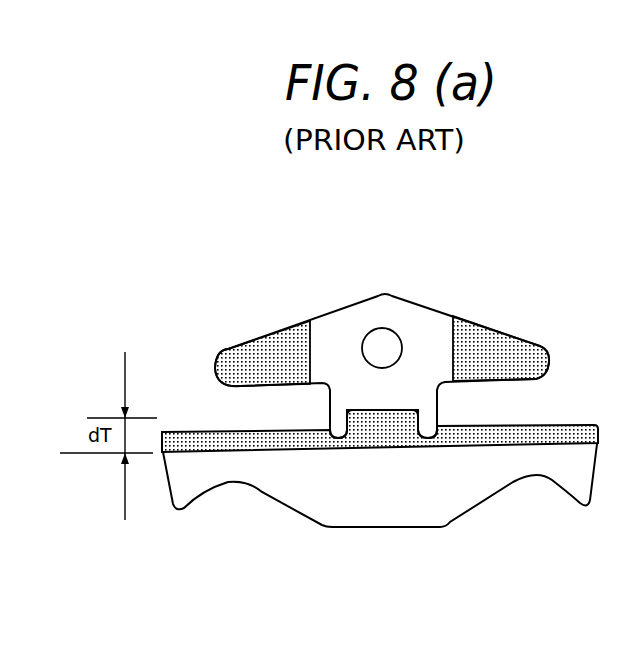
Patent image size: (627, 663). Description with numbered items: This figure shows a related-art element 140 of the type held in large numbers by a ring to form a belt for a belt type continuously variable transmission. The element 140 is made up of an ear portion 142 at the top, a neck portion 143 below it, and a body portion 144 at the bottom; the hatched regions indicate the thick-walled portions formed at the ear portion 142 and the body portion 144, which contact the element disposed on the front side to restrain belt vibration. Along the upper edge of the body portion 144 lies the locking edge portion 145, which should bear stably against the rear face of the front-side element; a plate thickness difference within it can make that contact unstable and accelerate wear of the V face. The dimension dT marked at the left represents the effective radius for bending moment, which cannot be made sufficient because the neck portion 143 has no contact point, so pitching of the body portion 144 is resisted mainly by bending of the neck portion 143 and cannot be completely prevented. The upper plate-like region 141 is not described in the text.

The element 140 is at (508, 252).
The die pad / semiconductor chip body 141 is at (416, 305).
The ear portion 142 is at (258, 346).
The neck portion 143 is at (408, 396).
The body portion 144 is at (386, 528).
The locking edge portion 145 is at (197, 432).